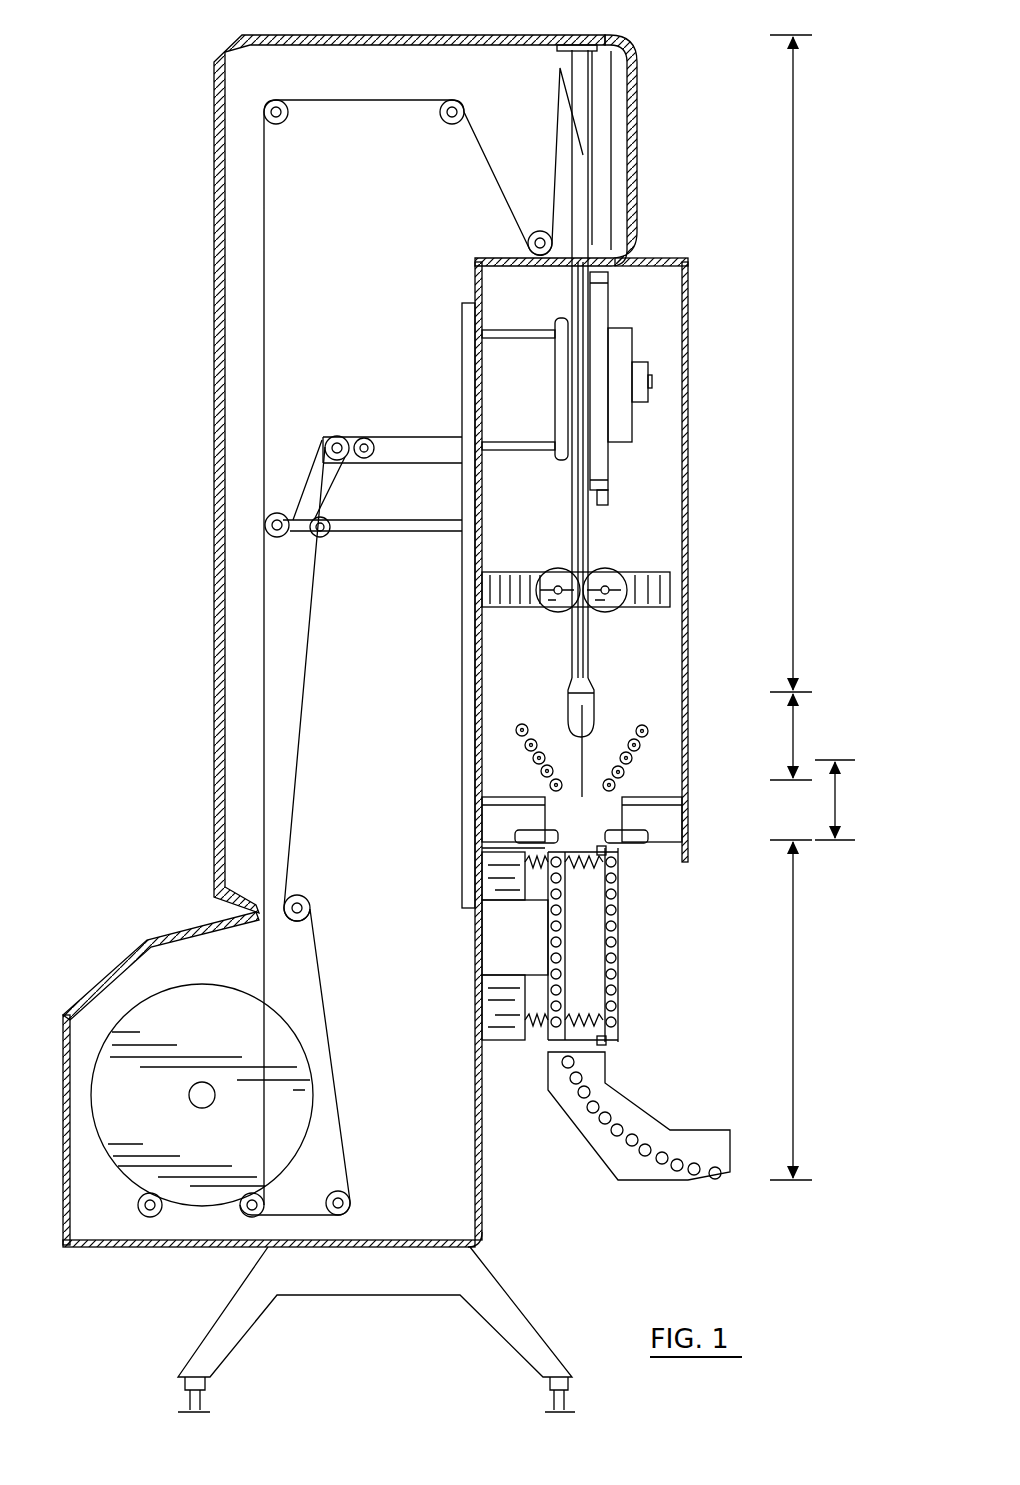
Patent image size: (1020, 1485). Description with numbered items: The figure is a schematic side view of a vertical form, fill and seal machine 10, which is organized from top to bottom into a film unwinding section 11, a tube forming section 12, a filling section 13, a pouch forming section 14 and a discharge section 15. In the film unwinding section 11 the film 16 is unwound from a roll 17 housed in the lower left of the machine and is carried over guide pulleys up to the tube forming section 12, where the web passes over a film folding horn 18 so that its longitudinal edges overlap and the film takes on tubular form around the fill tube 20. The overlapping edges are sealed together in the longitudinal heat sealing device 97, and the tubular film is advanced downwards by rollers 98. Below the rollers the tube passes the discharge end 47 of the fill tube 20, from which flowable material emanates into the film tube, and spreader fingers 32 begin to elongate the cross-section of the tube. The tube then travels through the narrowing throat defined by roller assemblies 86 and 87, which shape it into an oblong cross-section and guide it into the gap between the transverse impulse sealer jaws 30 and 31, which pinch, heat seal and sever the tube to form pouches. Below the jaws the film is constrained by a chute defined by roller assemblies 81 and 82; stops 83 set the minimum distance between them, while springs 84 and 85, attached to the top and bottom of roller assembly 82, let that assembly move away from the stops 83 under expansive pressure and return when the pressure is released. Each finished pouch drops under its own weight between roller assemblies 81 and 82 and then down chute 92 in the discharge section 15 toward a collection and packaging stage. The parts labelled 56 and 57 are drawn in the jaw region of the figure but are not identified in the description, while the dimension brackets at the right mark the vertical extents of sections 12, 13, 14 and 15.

The vertical form, fill and seal machine 10 is at (690, 512).
The film unwinding section 11 is at (285, 383).
The tube forming section 12 is at (798, 363).
The filling section 13 is at (795, 737).
The pouch forming section 14 is at (839, 800).
The discharge section 15 is at (798, 1010).
The film 16 is at (288, 745).
The roll 17 is at (140, 1022).
The film folding horn 18 is at (572, 127).
The fill tube 20 is at (583, 72).
The jaw 30 is at (655, 816).
The jaw 31 is at (510, 816).
The spreader finger 32 is at (577, 757).
The discharge end of fill tube 47 is at (586, 715).
The right foot 56 is at (642, 845).
The left support block 57 is at (505, 862).
The roller assembly 81 is at (572, 945).
The roller assembly 82 is at (618, 978).
The stops 83 is at (606, 853).
The spring 84 is at (546, 866).
The spring 85 is at (536, 1045).
The roller assembly 86 is at (645, 748).
The roller assembly 87 is at (528, 762).
The chute 92 is at (654, 1102).
The longitudinal heat sealing device 97 is at (668, 308).
The rollers 98 is at (672, 591).